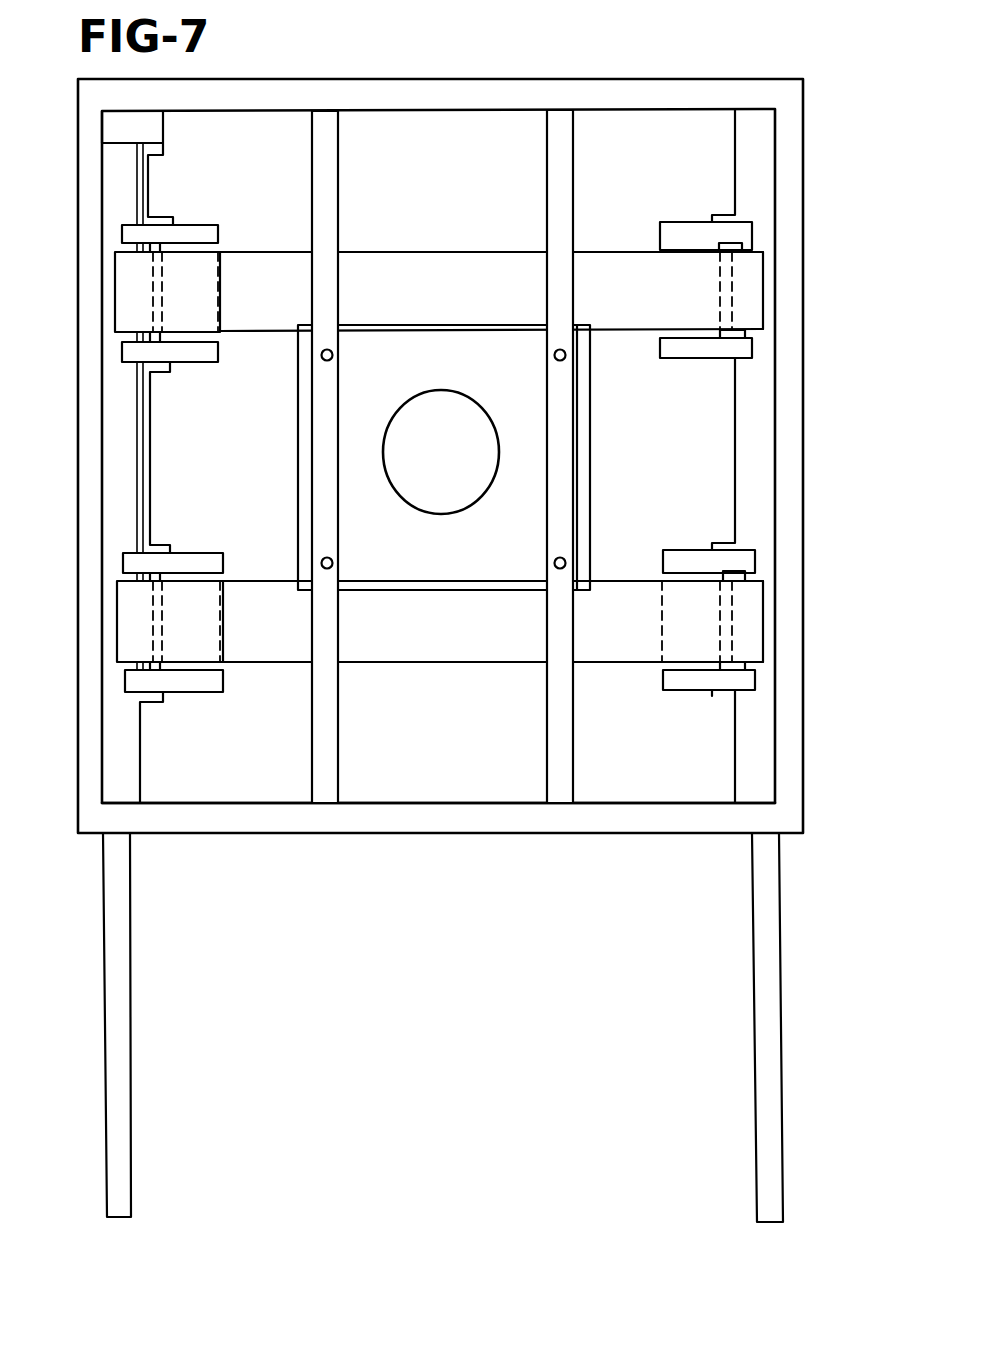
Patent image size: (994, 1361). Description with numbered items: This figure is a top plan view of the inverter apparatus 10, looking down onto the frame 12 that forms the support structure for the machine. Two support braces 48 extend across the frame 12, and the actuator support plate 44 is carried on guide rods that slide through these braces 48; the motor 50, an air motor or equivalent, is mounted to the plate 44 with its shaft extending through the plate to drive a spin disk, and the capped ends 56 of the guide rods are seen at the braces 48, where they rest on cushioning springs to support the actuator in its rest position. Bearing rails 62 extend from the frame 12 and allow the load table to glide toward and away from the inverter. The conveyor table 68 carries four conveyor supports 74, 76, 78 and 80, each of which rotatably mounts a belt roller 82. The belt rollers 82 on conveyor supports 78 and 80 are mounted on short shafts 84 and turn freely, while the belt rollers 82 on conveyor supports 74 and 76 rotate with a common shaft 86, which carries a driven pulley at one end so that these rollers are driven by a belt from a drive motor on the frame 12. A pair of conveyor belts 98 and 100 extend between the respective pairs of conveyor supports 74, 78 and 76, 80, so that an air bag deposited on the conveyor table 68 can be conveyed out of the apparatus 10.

The inverter apparatus 10 is at (641, 70).
The frame 12 is at (769, 79).
The actuator support plate 44 is at (530, 418).
The support braces 48 is at (330, 166).
The motor 50 is at (441, 512).
The capped ends 56 is at (553, 355).
The bearing rails 62 is at (125, 990).
The conveyor table 68 is at (593, 790).
The conveyor support 74 is at (192, 362).
The conveyor support 76 is at (205, 688).
The conveyor support 78 is at (735, 213).
The conveyor support 80 is at (745, 690).
The belt rollers 82 is at (122, 340).
The short shafts 84 is at (745, 248).
The shaft 86 is at (137, 445).
The conveyor belt 98 is at (448, 258).
The conveyor belt 100 is at (618, 581).